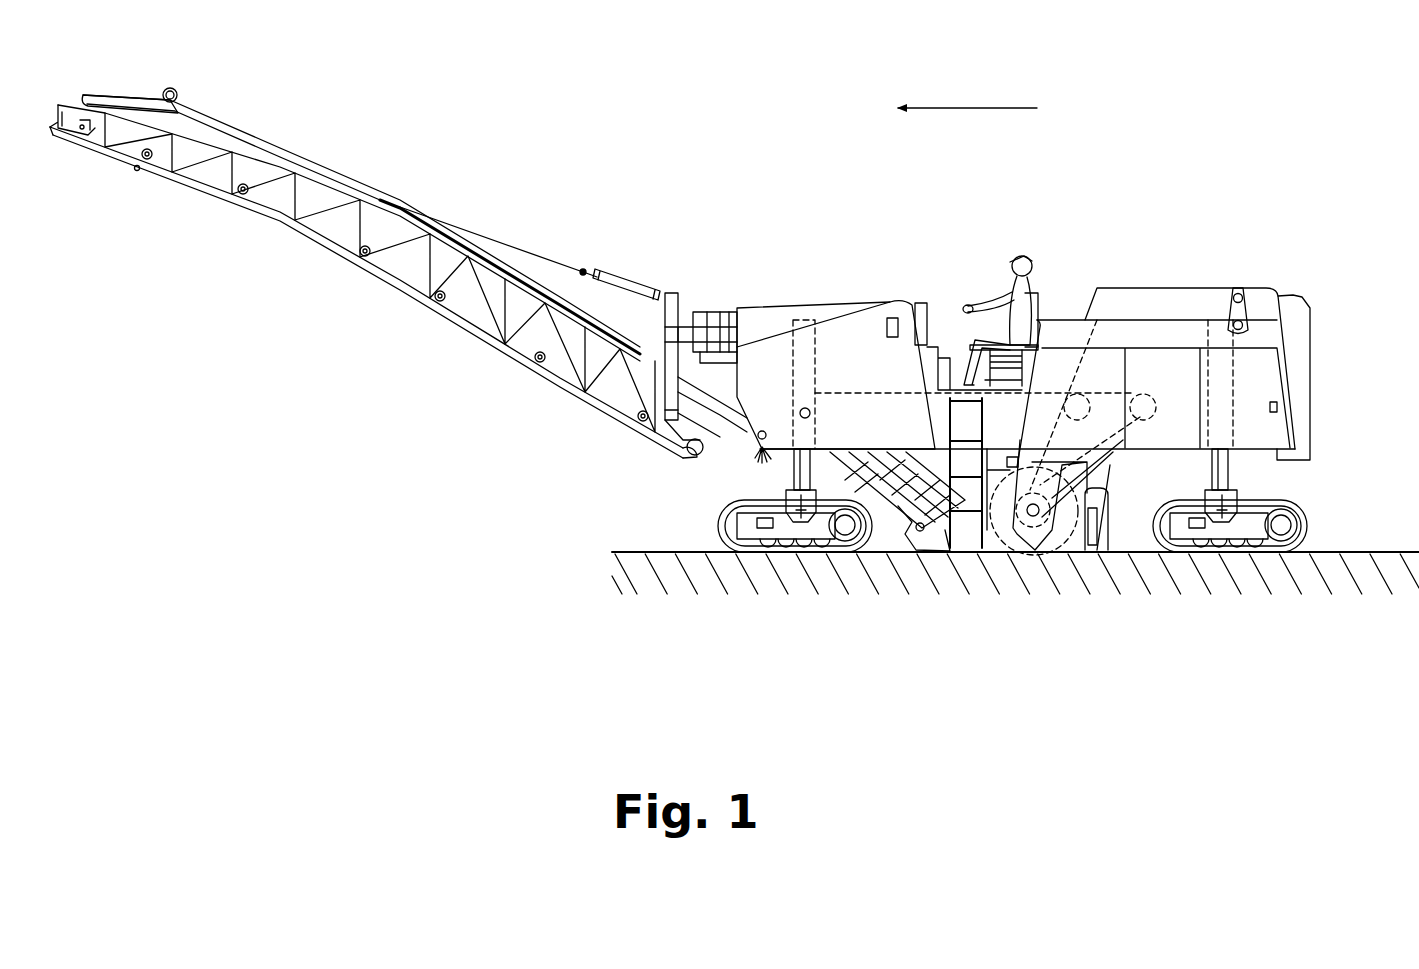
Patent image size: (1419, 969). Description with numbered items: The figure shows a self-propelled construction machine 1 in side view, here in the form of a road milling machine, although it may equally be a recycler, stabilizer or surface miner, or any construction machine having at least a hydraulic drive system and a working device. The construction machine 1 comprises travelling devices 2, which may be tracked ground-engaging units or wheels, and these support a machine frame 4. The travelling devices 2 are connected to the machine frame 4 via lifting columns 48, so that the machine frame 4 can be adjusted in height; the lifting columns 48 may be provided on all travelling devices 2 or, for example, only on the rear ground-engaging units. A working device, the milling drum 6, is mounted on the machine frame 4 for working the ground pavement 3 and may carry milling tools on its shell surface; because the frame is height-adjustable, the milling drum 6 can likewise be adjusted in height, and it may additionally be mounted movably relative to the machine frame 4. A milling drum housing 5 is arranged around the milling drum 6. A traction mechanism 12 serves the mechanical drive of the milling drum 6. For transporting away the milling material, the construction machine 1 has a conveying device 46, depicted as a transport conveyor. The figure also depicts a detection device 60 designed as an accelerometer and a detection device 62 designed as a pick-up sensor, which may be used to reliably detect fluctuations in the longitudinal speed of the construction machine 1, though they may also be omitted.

The construction machine 1 is at (1128, 214).
The travelling devices 2 is at (705, 527).
The ground pavement 3 is at (1390, 565).
The machine frame 4 is at (1270, 335).
The milling drum housing 5 is at (953, 548).
The milling drum 6 is at (1058, 553).
The traction mechanism 12 is at (1112, 460).
The conveying device 46 is at (573, 247).
The lifting columns 48 is at (794, 474).
The detection device 60 is at (892, 318).
The detection device 62 is at (765, 528).